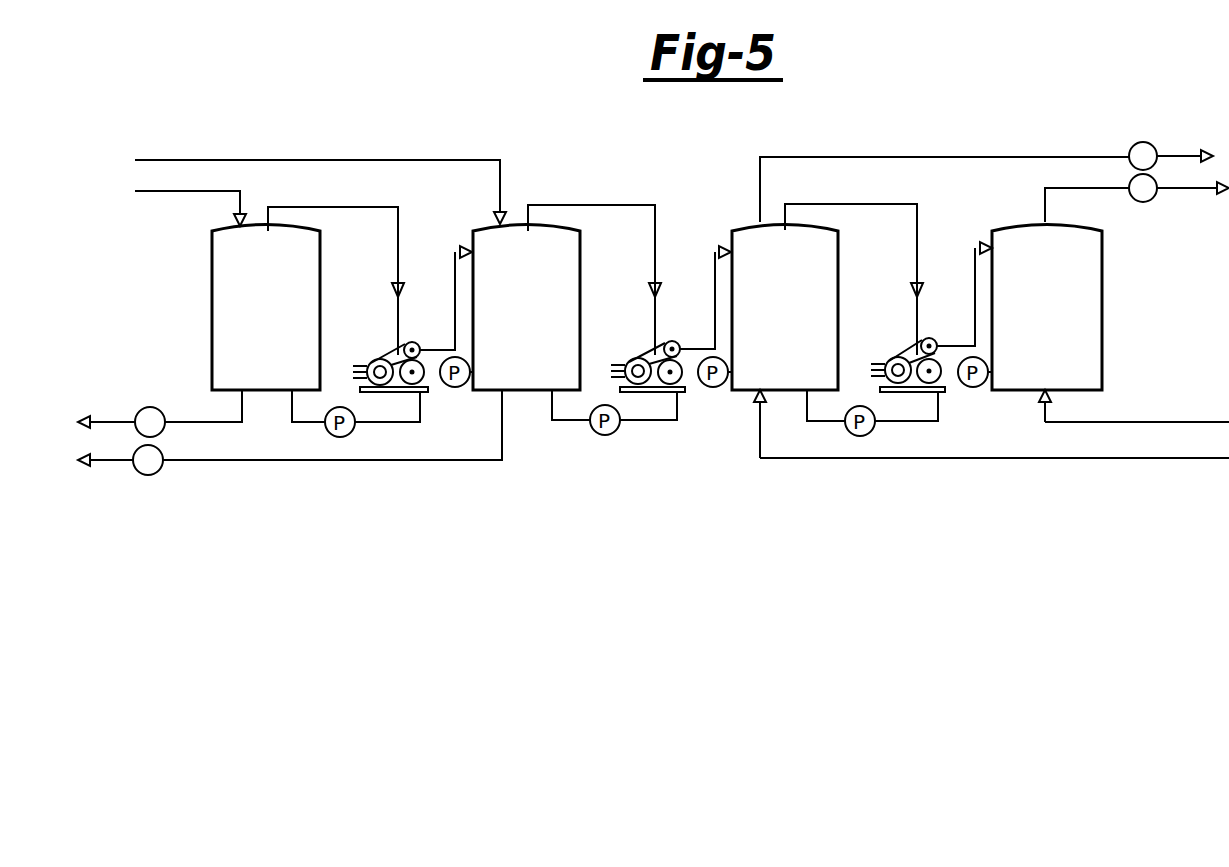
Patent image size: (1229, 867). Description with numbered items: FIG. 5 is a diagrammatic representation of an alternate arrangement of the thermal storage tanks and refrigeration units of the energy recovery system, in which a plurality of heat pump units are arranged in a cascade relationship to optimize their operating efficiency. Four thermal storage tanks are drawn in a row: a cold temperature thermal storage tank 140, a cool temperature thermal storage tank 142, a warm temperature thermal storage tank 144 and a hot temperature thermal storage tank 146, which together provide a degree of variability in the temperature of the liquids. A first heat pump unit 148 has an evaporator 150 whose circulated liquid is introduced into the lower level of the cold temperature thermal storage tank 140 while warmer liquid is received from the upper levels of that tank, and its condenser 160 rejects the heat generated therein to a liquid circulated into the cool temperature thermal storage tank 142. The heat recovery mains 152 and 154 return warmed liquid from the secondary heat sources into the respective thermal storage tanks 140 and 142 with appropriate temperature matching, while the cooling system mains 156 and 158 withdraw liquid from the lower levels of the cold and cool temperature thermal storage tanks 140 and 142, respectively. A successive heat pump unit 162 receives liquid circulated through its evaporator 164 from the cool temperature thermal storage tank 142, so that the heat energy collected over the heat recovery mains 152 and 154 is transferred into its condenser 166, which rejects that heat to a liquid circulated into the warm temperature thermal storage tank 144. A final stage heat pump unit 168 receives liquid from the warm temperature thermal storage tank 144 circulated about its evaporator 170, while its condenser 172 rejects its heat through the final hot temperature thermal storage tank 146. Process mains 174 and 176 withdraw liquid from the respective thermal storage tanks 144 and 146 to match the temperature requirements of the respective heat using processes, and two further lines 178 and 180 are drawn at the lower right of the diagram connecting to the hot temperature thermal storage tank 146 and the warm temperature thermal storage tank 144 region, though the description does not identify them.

The cold temperature thermal storage tank 140 is at (212, 291).
The cool temperature thermal storage tank 142 is at (622, 274).
The warm temperature thermal storage tank 144 is at (839, 249).
The hot temperature thermal storage tank 146 is at (1102, 279).
The first heat pump unit 148 is at (364, 353).
The evaporator 150 is at (433, 376).
The heat recovery main 152 is at (200, 192).
The heat recovery main 154 is at (206, 160).
The cooling system main 156 is at (124, 418).
The cooling system main 158 is at (168, 467).
The condenser 160 is at (408, 344).
The successive heat pump unit 162 is at (640, 326).
The evaporator 164 is at (686, 372).
The condenser 166 is at (680, 324).
The final stage heat pump unit 168 is at (897, 342).
The evaporator 170 is at (942, 373).
The condenser 172 is at (929, 338).
The process main 174 is at (853, 157).
The process main 176 is at (1058, 188).
The return line 178 is at (1082, 459).
The hot water supply line 180 is at (1093, 421).